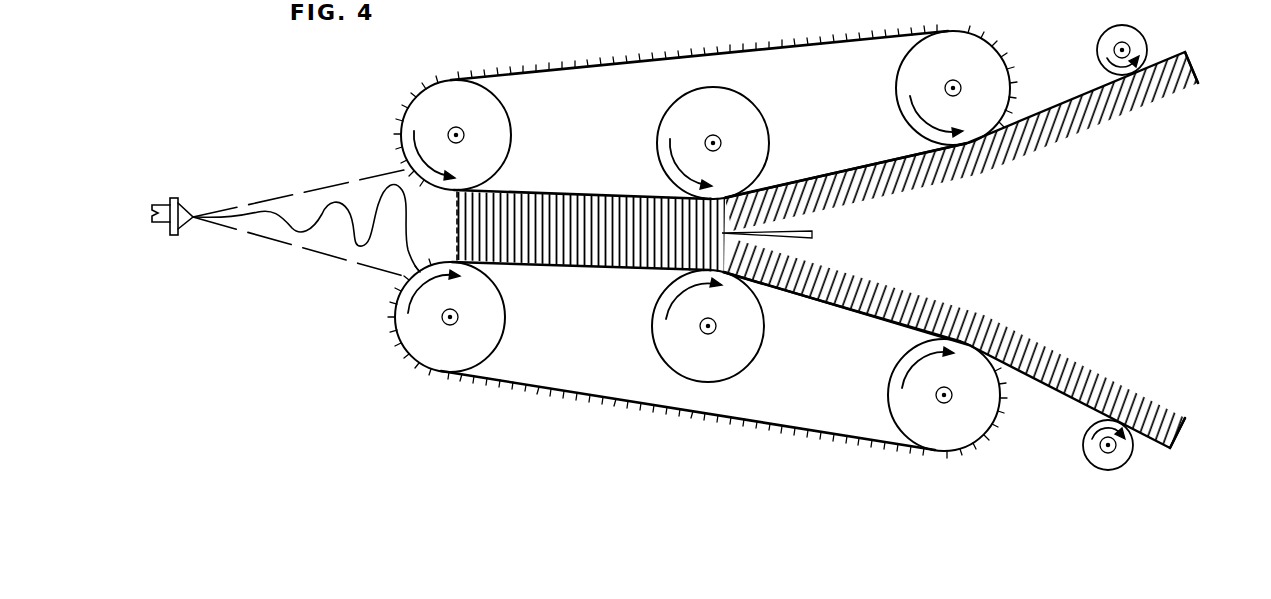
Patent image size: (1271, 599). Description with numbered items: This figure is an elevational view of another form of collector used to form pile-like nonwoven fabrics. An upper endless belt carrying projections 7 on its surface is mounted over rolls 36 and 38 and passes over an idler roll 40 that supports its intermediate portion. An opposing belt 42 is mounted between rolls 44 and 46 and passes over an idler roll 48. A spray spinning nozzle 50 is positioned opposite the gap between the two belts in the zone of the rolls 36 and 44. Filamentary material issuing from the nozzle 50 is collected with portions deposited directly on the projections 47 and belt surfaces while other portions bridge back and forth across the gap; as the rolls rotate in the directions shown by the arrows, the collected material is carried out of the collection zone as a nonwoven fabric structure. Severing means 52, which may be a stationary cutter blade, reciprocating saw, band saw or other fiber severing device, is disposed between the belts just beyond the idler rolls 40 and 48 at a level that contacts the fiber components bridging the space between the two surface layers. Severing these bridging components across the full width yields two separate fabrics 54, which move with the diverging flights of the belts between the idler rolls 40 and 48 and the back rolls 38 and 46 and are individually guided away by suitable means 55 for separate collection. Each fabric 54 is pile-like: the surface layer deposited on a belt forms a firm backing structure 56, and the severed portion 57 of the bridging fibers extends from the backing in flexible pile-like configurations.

The projections 7 is at (404, 353).
The roll 36 is at (432, 105).
The roll 38 is at (998, 68).
The idler roll 40 is at (746, 129).
The opposing belt 42 is at (535, 393).
The roll 44 is at (484, 312).
The roll 46 is at (978, 402).
The projections 47 is at (507, 67).
The idler roll 48 is at (742, 338).
The spray spinning nozzle 50 is at (175, 237).
The severing means 52 is at (812, 238).
The fabrics 54 is at (972, 173).
The guiding means 55 is at (1112, 37).
The backing structure 56 is at (1160, 66).
The severed portion 57 is at (1194, 68).